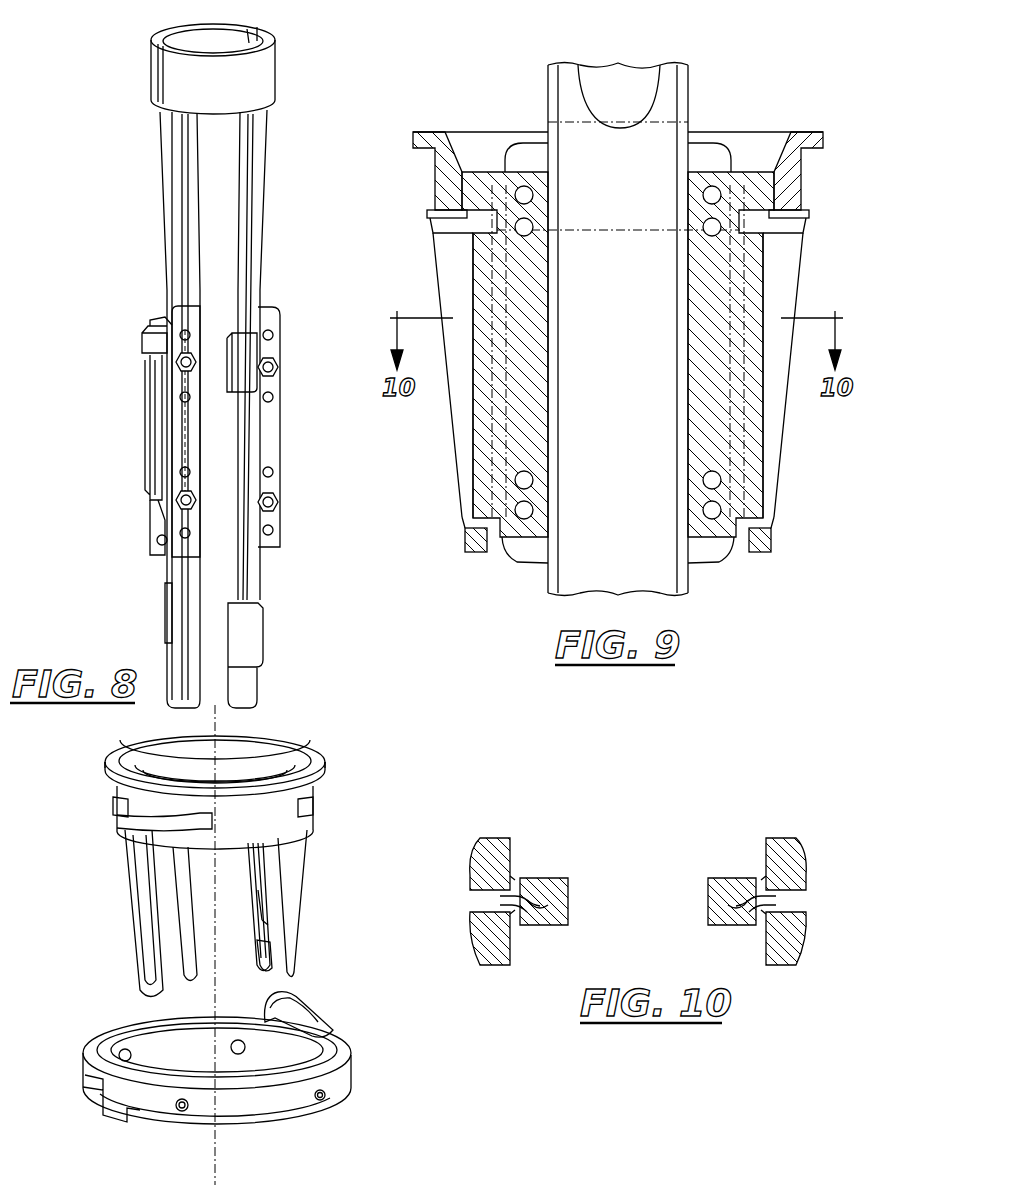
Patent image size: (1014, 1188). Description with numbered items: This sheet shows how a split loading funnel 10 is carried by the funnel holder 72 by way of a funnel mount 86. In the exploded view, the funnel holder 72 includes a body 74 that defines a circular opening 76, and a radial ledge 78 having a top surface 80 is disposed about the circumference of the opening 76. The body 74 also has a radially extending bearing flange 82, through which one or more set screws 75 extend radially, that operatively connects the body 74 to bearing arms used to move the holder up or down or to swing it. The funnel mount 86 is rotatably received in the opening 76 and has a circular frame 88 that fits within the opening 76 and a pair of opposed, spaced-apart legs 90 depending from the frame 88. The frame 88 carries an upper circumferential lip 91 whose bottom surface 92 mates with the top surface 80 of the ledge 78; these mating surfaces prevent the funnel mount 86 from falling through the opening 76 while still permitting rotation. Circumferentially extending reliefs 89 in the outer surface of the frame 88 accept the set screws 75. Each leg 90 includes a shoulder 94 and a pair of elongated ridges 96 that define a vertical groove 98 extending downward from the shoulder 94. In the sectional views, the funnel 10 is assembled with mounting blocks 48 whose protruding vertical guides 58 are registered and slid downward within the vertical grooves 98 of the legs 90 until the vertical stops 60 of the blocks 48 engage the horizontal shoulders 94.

In FIG. 8, the split loading funnel 10 is at (128, 72).
In FIG. 9, the split loading funnel 10 is at (676, 97).
In FIG. 9, the mounting block 48 is at (522, 390).
In FIG. 10, the mounting block 48 is at (562, 905).
In FIG. 9, the vertical guide 58 is at (480, 262).
In FIG. 10, the vertical guide 58 is at (498, 898).
In FIG. 9, the vertical stop 60 is at (490, 182).
In FIG. 8, the funnel holder 72 is at (72, 1103).
In FIG. 8, the body 74 is at (355, 1055).
In FIG. 8, the set screw 75 is at (215, 1040).
In FIG. 8, the circular opening 76 is at (305, 1033).
In FIG. 8, the radial ledge 78 is at (112, 1067).
In FIG. 8, the top surface 80 is at (110, 1048).
In FIG. 8, the bearing flange 82 is at (147, 1103).
In FIG. 8, the funnel mount 86 is at (105, 814).
In FIG. 9, the funnel mount 86 is at (410, 166).
In FIG. 8, the circular frame 88 is at (290, 823).
In FIG. 8, the relief 89 is at (113, 802).
In FIG. 8, the leg 90 is at (302, 897).
In FIG. 9, the leg 90 is at (458, 482).
In FIG. 10, the leg 90 is at (470, 937).
In FIG. 8, the upper circumferential lip 91 is at (325, 762).
In FIG. 8, the bottom surface 92 is at (105, 782).
In FIG. 8, the shoulder 94 is at (226, 772).
In FIG. 9, the shoulder 94 is at (440, 216).
In FIG. 8, the elongated ridge 96 is at (276, 928).
In FIG. 10, the elongated ridge 96 is at (515, 878).
In FIG. 8, the vertical groove 98 is at (268, 950).
In FIG. 9, the vertical groove 98 is at (466, 525).
In FIG. 10, the vertical groove 98 is at (535, 903).